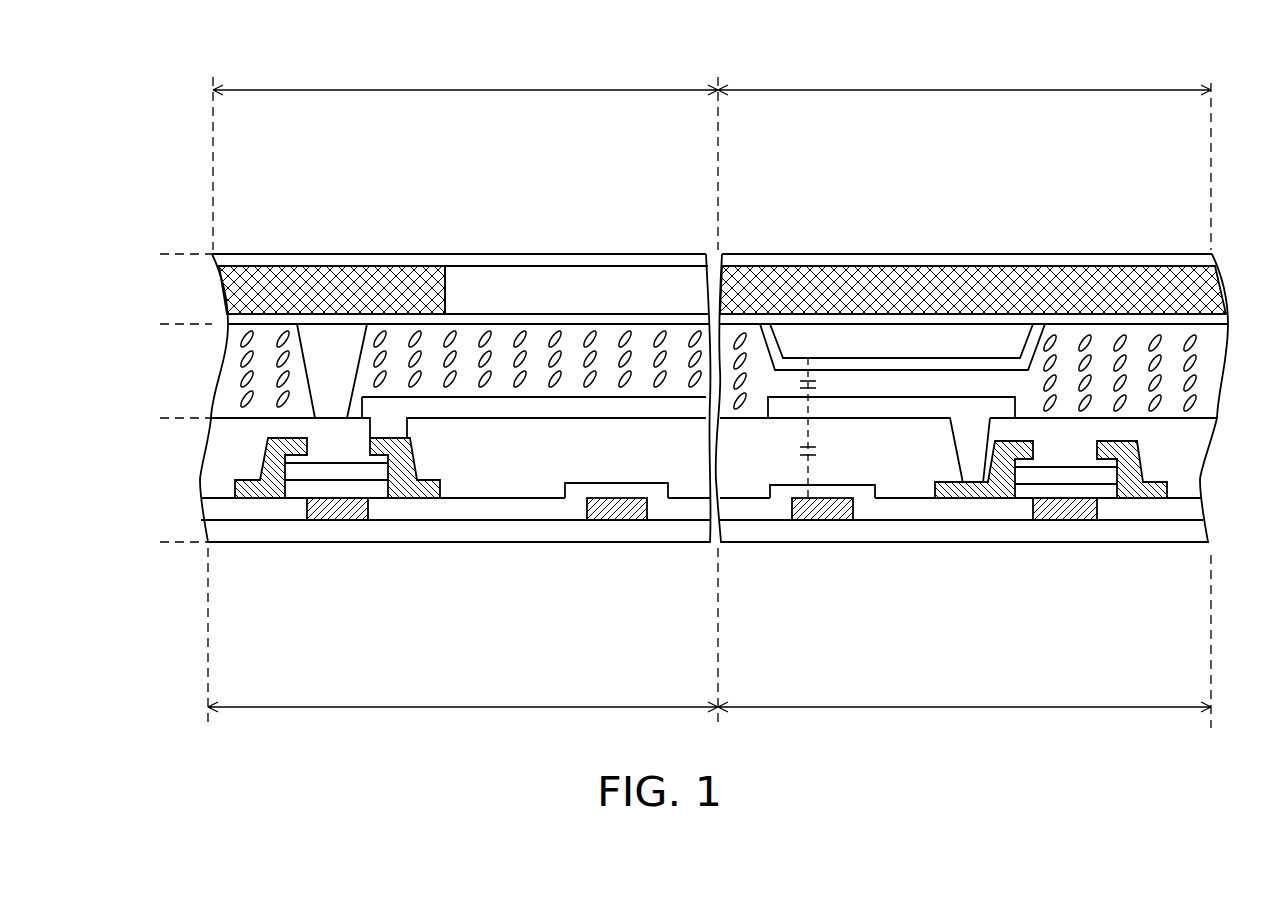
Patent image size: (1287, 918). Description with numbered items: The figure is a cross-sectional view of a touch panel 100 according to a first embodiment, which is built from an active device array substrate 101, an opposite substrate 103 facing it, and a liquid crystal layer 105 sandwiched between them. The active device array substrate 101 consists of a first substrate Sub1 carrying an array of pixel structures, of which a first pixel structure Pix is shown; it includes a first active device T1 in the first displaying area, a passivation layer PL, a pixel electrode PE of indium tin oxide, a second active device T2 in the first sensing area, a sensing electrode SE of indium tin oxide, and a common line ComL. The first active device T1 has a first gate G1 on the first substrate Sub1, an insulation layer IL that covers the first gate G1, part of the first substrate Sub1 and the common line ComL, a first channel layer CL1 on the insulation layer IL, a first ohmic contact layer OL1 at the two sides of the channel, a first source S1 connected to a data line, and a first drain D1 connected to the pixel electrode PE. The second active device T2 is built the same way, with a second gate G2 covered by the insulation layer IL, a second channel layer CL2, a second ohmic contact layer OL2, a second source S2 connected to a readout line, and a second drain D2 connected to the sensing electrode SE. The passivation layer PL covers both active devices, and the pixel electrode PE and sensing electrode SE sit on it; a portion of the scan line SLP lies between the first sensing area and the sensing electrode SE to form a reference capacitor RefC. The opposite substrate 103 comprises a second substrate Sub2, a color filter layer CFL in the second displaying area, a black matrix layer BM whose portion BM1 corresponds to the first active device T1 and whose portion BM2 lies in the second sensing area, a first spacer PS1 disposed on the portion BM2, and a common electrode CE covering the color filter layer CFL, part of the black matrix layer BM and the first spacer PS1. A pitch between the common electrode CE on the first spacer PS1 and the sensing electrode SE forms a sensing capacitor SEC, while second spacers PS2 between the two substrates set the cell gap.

The touch panel 100 is at (680, 409).
The active device array substrate 101 is at (159, 420).
The opposite substrate 103 is at (159, 257).
The liquid crystal layer 105 is at (159, 325).
The first substrate Sub1 is at (222, 533).
The second substrate Sub2 is at (257, 256).
The black matrix layer BM is at (507, 141).
The portion of the black matrix layer BM1 is at (418, 277).
The portion of the black matrix layer BM2 is at (780, 278).
The color filter layer CFL is at (553, 272).
The common electrode CE is at (636, 322).
The first spacer PS1 is at (878, 350).
The second spacer PS2 is at (312, 340).
The sensing capacitor SEC is at (826, 428).
The reference capacitor RefC is at (785, 455).
The portion of the scan line SLP is at (833, 505).
The sensing electrode SE is at (896, 410).
The first active device T1 is at (462, 591).
The second active device T2 is at (1157, 594).
The first source S1 is at (258, 484).
The first ohmic contact layer OL1 is at (293, 458).
The first channel layer CL1 is at (338, 472).
The first gate G1 is at (337, 508).
The first drain D1 is at (409, 490).
The insulation layer IL is at (450, 508).
The pixel electrode PE is at (495, 408).
The passivation layer PL is at (533, 467).
The common line ComL is at (617, 512).
The first pixel structure Pix is at (1070, 631).
The second drain D2 is at (968, 494).
The second ohmic contact layer OL2 is at (1022, 465).
The second channel layer CL2 is at (1064, 475).
The second gate G2 is at (1063, 512).
The second source S2 is at (1132, 495).